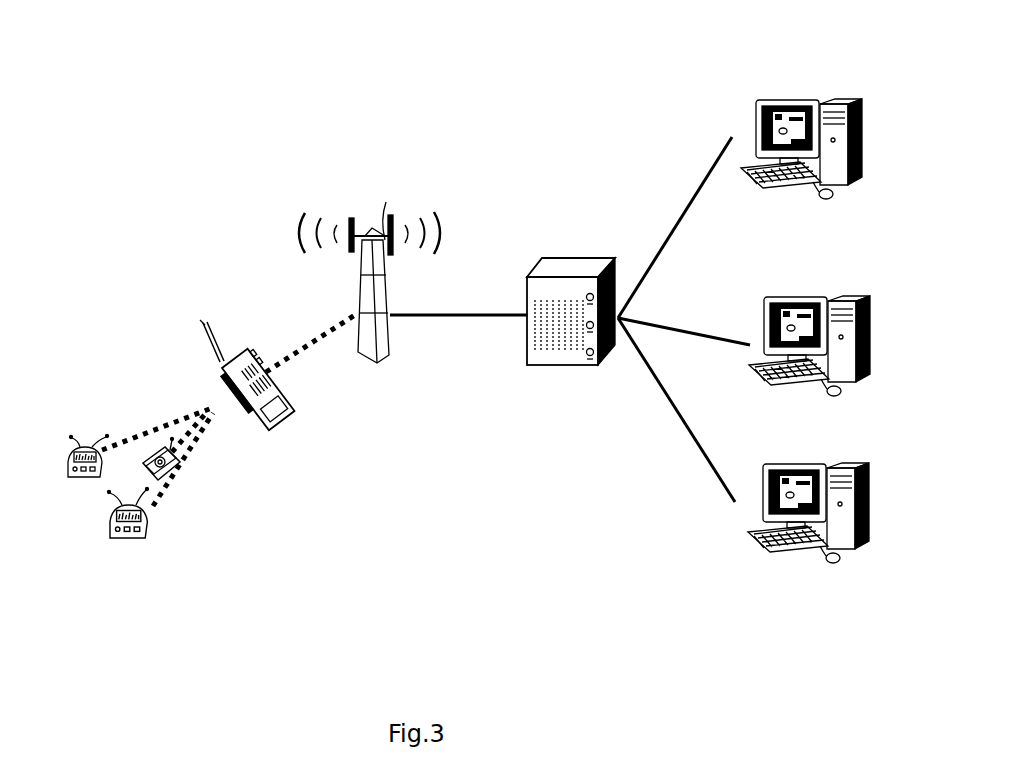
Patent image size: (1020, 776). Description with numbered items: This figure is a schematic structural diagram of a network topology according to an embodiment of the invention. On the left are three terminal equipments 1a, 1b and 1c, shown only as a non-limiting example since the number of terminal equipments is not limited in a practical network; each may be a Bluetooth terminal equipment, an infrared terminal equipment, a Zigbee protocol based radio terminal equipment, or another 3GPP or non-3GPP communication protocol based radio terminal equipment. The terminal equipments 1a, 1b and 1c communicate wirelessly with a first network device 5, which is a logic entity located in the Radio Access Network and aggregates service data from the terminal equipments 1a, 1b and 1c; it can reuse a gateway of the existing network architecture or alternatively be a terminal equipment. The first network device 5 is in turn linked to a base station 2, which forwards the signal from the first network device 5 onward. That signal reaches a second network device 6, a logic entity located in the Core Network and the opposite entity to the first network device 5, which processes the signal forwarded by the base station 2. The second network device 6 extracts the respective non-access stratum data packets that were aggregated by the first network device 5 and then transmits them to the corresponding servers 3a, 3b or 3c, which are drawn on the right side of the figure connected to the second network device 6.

The base station 2 is at (368, 270).
The first network device 5 is at (242, 360).
The second network device 6 is at (596, 228).
The server 3a is at (803, 465).
The server 3b is at (802, 297).
The server 3c is at (794, 100).
The terminal equipment 1a is at (128, 540).
The terminal equipment 1b is at (118, 414).
The terminal equipment 1c is at (178, 472).